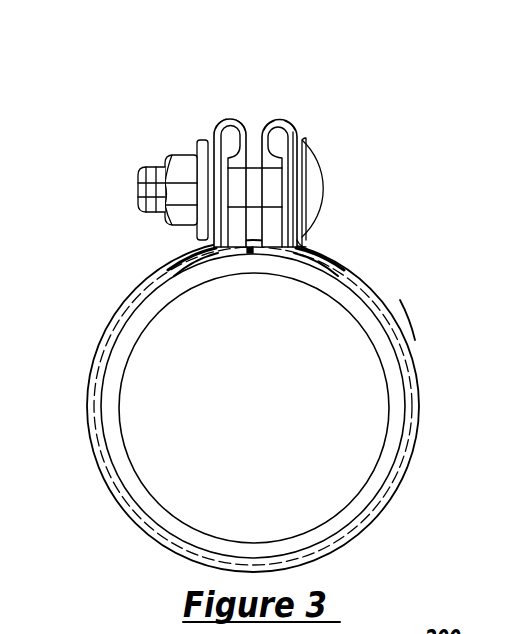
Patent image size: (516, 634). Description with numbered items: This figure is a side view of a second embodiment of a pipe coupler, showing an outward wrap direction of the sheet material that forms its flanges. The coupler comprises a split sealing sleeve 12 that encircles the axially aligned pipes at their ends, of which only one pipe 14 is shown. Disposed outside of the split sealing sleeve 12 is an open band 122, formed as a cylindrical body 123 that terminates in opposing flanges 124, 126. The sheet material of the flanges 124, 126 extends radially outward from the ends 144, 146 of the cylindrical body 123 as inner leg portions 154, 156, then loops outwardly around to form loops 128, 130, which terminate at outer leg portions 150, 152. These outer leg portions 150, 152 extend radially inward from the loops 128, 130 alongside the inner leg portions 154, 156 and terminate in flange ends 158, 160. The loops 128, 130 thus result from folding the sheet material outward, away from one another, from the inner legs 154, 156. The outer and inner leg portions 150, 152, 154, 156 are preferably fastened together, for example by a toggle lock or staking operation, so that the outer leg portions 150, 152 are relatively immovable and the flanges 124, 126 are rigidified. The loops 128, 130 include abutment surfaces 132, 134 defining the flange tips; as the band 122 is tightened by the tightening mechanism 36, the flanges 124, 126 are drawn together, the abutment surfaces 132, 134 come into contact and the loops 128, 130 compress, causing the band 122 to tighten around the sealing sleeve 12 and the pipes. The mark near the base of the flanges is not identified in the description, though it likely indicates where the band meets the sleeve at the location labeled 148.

The split sealing sleeve 12 is at (120, 343).
The pipe 14 is at (400, 386).
The tightening mechanism 36 is at (336, 182).
The open band 122 is at (404, 325).
The cylindrical body 123 is at (100, 464).
The flange 124 is at (204, 128).
The flange 126 is at (307, 128).
The loop 128 is at (223, 119).
The loop 130 is at (282, 119).
The abutment surface 132 is at (250, 120).
The abutment surface 134 is at (258, 120).
The end of cylindrical body 144 is at (195, 259).
The end of cylindrical body 146 is at (300, 249).
The spot weld 148 is at (256, 244).
The outer leg portion 150 is at (138, 206).
The outer leg portion 152 is at (294, 220).
The inner leg portion 154 is at (165, 183).
The inner leg portion 156 is at (306, 153).
The flange end 158 is at (205, 243).
The flange end 160 is at (298, 241).